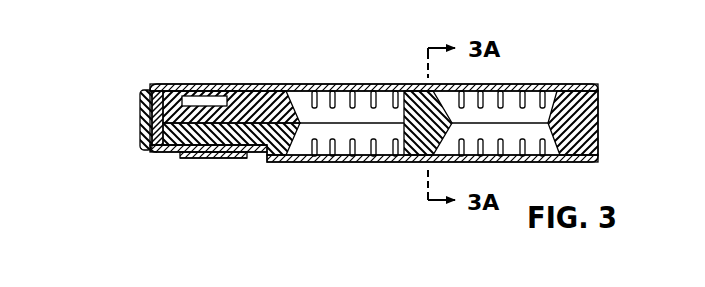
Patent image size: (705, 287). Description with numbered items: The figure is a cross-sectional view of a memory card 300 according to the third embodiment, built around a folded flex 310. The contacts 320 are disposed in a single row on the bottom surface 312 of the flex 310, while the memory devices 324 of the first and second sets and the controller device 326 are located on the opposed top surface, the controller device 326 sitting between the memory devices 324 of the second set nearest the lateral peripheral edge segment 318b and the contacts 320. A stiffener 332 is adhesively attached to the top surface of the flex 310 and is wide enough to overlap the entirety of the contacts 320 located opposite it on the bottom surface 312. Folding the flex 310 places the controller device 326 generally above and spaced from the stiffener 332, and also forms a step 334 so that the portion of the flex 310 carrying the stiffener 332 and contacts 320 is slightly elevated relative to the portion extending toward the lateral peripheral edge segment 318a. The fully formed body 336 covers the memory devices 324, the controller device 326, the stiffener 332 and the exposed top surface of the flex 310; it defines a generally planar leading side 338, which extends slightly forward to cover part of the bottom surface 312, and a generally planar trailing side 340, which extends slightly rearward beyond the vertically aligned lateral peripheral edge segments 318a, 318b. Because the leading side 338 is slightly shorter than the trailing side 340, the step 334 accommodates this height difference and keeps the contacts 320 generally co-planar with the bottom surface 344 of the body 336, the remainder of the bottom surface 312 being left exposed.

The memory card 300 is at (584, 54).
The flex 310 is at (400, 170).
The bottom surface 312 is at (361, 163).
The lateral peripheral edge segment 318a is at (598, 163).
The lateral peripheral edge segment 318b is at (597, 87).
The contacts 320 is at (197, 158).
The memory devices 324 is at (366, 138).
The controller device 326 is at (204, 98).
The stiffener 332 is at (145, 104).
The step 334 is at (258, 158).
The body 336 is at (276, 97).
The leading side 338 is at (142, 127).
The trailing side 340 is at (600, 108).
The bottom surface 344 is at (143, 146).